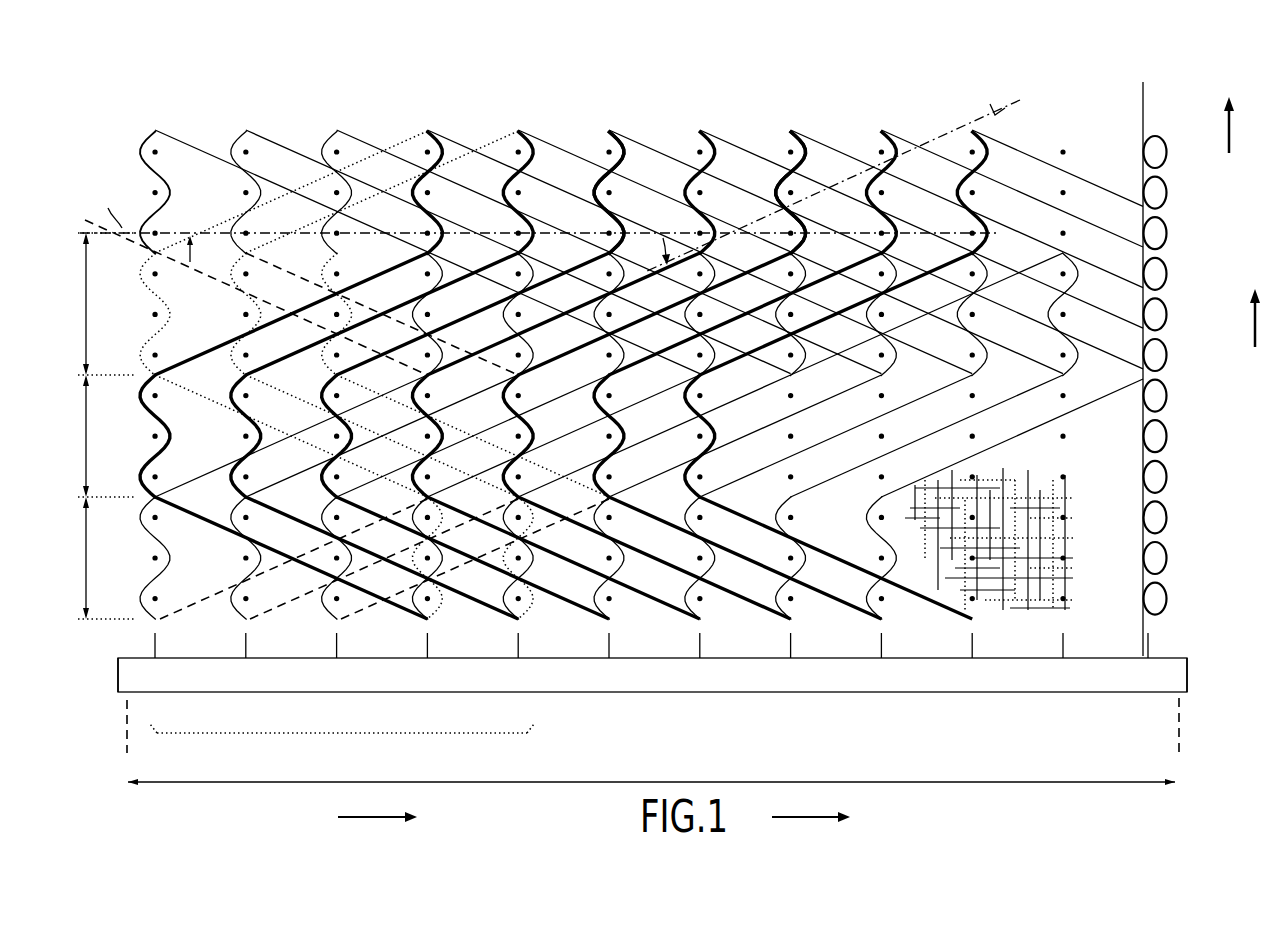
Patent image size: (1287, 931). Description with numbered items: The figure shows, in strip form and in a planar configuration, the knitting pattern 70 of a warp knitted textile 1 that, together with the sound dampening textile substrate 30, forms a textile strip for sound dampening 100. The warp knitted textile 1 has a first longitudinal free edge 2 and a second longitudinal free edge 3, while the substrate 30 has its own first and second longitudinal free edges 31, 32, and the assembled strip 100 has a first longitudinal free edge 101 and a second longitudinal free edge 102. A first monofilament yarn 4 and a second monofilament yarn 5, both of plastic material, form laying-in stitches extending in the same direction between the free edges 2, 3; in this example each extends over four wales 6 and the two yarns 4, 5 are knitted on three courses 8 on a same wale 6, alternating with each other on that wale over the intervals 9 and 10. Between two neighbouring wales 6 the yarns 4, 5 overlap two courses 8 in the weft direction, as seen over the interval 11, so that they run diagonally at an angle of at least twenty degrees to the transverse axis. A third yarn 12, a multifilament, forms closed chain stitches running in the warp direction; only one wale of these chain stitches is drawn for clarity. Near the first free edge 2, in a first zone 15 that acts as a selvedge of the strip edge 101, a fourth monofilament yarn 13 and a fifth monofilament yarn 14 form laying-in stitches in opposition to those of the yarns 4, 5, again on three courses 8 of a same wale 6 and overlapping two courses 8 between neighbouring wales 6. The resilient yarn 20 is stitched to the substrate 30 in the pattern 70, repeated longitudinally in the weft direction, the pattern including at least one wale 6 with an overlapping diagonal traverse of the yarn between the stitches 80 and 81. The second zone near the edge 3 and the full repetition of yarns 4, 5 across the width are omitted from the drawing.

The warp knitted textile 1 is at (666, 435).
The textile strip for sound dampening 100 is at (666, 435).
The first resilient yarn 20 is at (614, 333).
The fourth monofilament yarn 13 is at (301, 234).
The fifth monofilament yarn 14 is at (345, 141).
The second monofilament yarn 5 is at (618, 132).
The first monofilament yarn 4 is at (768, 142).
The third yarn 12 is at (1162, 115).
The knitting pattern 70 is at (508, 102).
The stitch 80 is at (140, 228).
The stitch 81 is at (136, 265).
The courses 8 is at (1200, 193).
The wales 6 is at (185, 640).
The interval 11 is at (76, 304).
The interval 9 is at (77, 436).
The interval 10 is at (74, 558).
The sound dampening textile substrate 30 is at (1045, 517).
The first zone 15 is at (342, 733).
The first longitudinal free edge 2 is at (108, 723).
The first longitudinal free edge of substrate 31 is at (112, 705).
The second longitudinal free edge 3 is at (1212, 723).
The second longitudinal free edge of substrate 32 is at (1192, 705).
The first longitudinal free edge of strip 101 is at (112, 770).
The second longitudinal free edge of strip 102 is at (1190, 765).